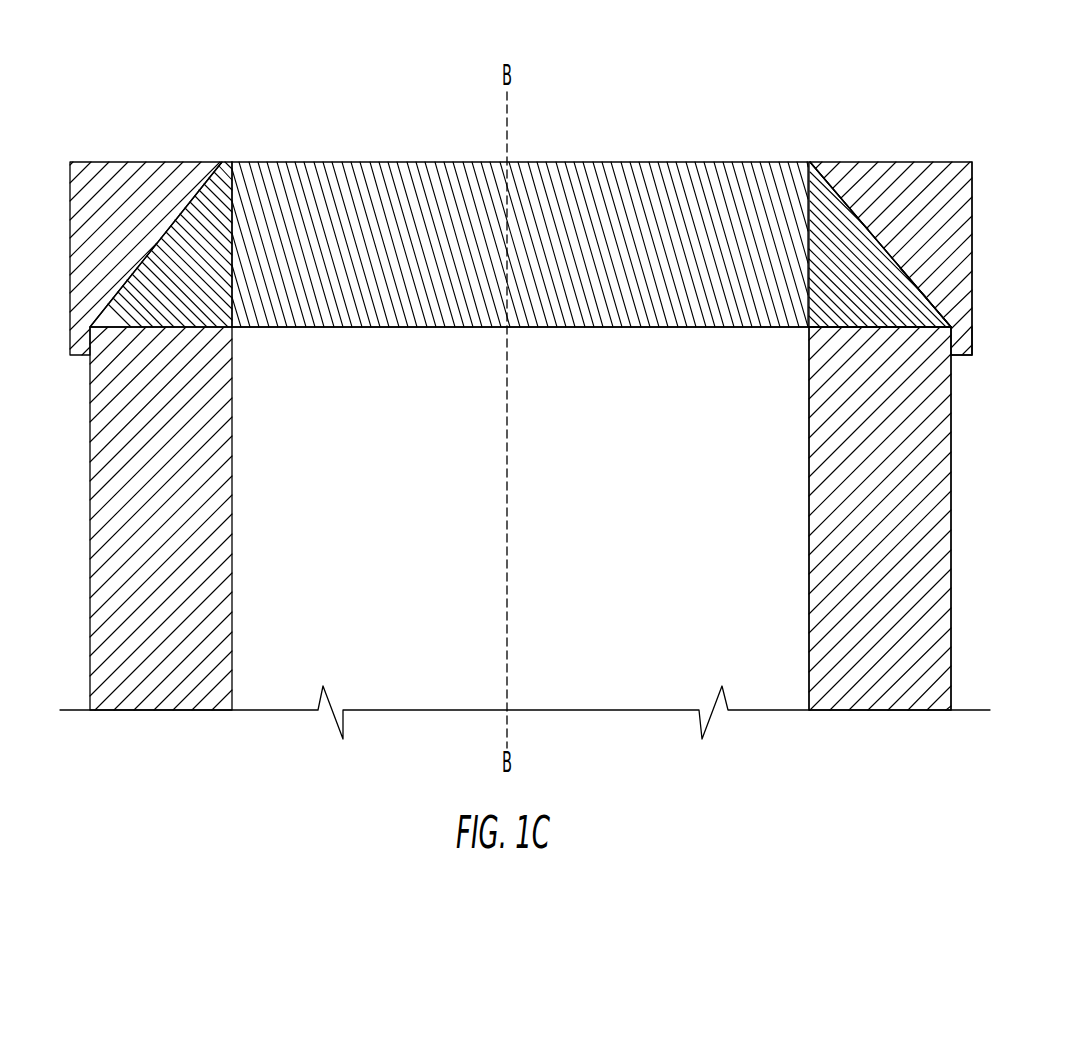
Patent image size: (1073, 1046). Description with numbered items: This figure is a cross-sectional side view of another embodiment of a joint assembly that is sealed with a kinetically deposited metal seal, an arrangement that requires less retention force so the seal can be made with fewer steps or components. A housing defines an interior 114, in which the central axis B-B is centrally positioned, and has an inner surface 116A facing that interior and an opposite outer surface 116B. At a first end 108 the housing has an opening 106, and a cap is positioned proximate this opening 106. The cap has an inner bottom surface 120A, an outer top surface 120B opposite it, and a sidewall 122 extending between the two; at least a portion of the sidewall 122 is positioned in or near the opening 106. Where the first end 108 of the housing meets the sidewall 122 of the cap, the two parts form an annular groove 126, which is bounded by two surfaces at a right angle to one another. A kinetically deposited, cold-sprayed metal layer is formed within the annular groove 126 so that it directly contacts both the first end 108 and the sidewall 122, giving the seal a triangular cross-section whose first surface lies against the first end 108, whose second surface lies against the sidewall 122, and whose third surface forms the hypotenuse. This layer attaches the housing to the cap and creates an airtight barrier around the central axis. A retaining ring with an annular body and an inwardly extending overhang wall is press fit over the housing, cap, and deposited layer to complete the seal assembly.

The opening 106 is at (631, 331).
The first end 108 is at (932, 325).
The interior 114 is at (785, 652).
The inner surface 116A is at (809, 590).
The outer surface 116B is at (951, 545).
The inner bottom surface 120A is at (581, 328).
The outer top surface 120B is at (547, 162).
The sidewall 122 is at (822, 197).
The annular groove 126 is at (837, 313).